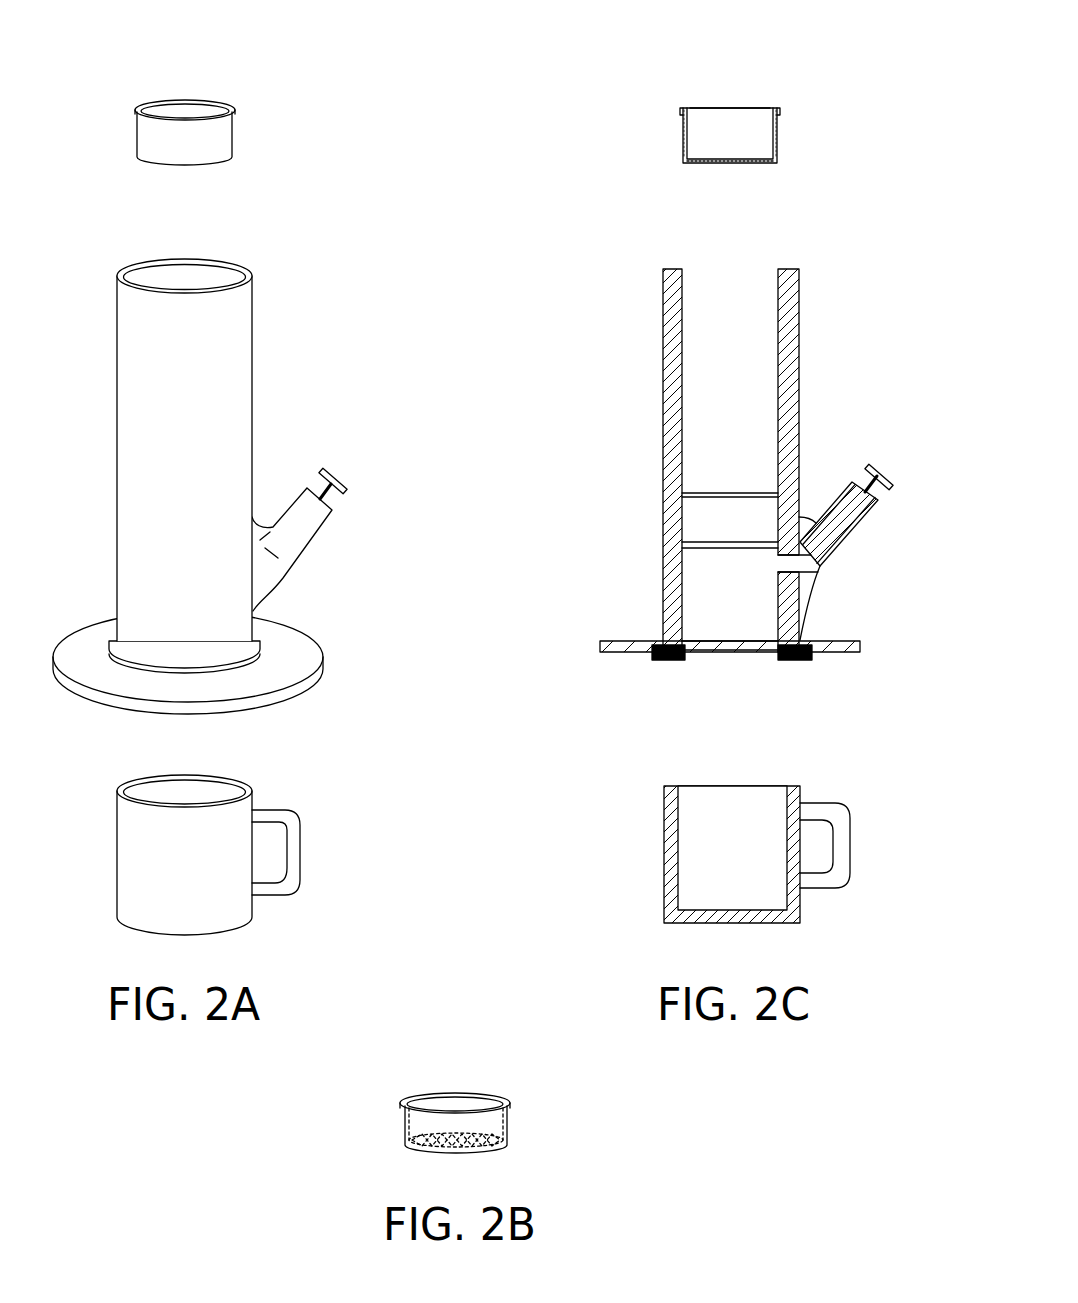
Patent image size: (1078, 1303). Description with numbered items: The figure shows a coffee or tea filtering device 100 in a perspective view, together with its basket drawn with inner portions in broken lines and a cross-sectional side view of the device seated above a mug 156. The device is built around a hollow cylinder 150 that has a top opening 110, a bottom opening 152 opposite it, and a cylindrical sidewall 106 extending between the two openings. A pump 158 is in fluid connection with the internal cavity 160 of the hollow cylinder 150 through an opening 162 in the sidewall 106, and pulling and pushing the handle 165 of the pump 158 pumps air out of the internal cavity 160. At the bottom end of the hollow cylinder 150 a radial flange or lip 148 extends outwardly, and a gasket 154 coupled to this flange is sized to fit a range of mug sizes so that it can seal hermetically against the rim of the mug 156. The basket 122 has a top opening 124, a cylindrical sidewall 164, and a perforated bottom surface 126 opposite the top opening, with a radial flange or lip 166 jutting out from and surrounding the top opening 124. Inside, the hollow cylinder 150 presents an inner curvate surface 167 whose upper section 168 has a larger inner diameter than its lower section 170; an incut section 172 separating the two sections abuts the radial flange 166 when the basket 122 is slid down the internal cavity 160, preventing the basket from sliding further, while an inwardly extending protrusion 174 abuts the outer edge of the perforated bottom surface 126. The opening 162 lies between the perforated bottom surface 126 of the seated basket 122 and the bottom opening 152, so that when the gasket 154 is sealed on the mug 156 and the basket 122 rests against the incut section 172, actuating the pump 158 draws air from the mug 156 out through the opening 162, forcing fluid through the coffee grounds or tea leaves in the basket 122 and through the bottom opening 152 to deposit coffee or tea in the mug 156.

In FIG. 2A, the coffee or tea filtering device 100 is at (144, 229).
In FIG. 2C, the coffee or tea filtering device 100 is at (591, 228).
In FIG. 2A, the cylindrical sidewall 106 is at (240, 394).
In FIG. 2C, the cylindrical sidewall 106 is at (786, 417).
In FIG. 2A, the top opening 110 is at (186, 273).
In FIG. 2C, the top opening 110 is at (737, 265).
In FIG. 2A, the basket 122 is at (150, 84).
In FIG. 2B, the basket 122 is at (469, 1059).
In FIG. 2C, the basket 122 is at (805, 96).
In FIG. 2A, the top opening 124 is at (184, 106).
In FIG. 2B, the top opening 124 is at (447, 1099).
In FIG. 2C, the top opening 124 is at (728, 103).
In FIG. 2B, the perforated bottom surface 126 is at (450, 1142).
In FIG. 2C, the perforated bottom surface 126 is at (731, 166).
In FIG. 2A, the radial flange or lip 148 is at (290, 643).
In FIG. 2C, the radial flange or lip 148 is at (827, 648).
In FIG. 2A, the hollow cylinder 150 is at (99, 416).
In FIG. 2C, the hollow cylinder 150 is at (639, 417).
In FIG. 2A, the bottom opening 152 is at (185, 725).
In FIG. 2C, the bottom opening 152 is at (722, 666).
In FIG. 2C, the gasket 154 is at (794, 653).
In FIG. 2A, the mug 156 is at (309, 809).
In FIG. 2C, the mug 156 is at (637, 830).
In FIG. 2A, the pump 158 is at (337, 548).
In FIG. 2C, the pump 158 is at (872, 538).
In FIG. 2C, the internal cavity 160 is at (730, 381).
In FIG. 2C, the opening 162 is at (774, 566).
In FIG. 2A, the cylindrical sidewall 164 is at (222, 133).
In FIG. 2B, the cylindrical sidewall 164 is at (507, 1123).
In FIG. 2C, the cylindrical sidewall 164 is at (777, 133).
In FIG. 2A, the handle 165 is at (327, 468).
In FIG. 2C, the handle 165 is at (870, 465).
In FIG. 2A, the radial flange or lip 166 is at (135, 110).
In FIG. 2B, the radial flange or lip 166 is at (507, 1100).
In FIG. 2C, the radial flange or lip 166 is at (683, 112).
In FIG. 2A, the inner curvate surface 167 is at (157, 275).
In FIG. 2C, the inner curvate surface 167 is at (682, 302).
In FIG. 2C, the upper section 168 is at (776, 333).
In FIG. 2C, the lower section 170 is at (772, 521).
In FIG. 2C, the incut section 172 is at (708, 490).
In FIG. 2C, the inwardly extending protrusion 174 is at (707, 550).